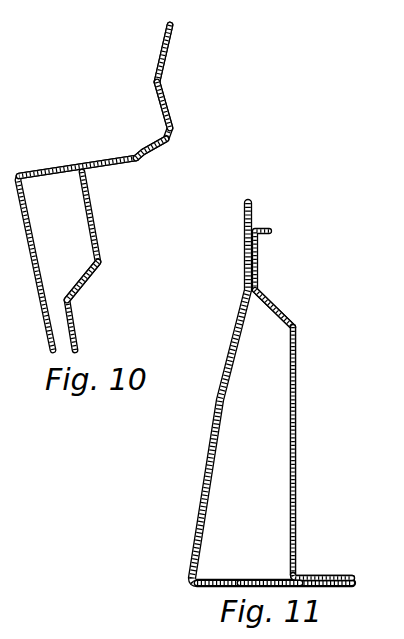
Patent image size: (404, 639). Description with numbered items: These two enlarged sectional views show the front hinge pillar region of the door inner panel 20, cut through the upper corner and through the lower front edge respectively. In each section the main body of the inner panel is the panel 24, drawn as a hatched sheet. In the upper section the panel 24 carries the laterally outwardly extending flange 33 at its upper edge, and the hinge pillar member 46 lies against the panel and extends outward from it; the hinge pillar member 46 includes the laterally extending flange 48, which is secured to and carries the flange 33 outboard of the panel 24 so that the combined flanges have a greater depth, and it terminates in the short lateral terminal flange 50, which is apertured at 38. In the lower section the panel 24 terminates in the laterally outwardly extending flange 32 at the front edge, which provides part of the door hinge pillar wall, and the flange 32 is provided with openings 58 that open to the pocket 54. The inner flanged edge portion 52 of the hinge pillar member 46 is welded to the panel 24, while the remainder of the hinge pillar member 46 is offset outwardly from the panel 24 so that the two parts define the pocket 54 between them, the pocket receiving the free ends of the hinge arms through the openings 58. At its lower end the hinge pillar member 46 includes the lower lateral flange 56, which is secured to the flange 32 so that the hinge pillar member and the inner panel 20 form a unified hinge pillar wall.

In FIG. 10, the door inner panel 20 is at (112, 187).
In FIG. 11, the door inner panel 20 is at (253, 414).
In FIG. 10, the panel 24 is at (38, 268).
In FIG. 11, the panel 24 is at (200, 497).
In FIG. 11, the flange 32 is at (200, 587).
In FIG. 10, the flange 33 is at (52, 168).
In FIG. 10, the apertures 38 is at (167, 37).
In FIG. 10, the hinge pillar member 46 is at (95, 234).
In FIG. 11, the hinge pillar member 46 is at (297, 402).
In FIG. 10, the flange 48 is at (147, 148).
In FIG. 10, the terminal flange 50 is at (175, 52).
In FIG. 11, the inner flanged edge portion 52 is at (256, 262).
In FIG. 10, the pocket 54 is at (82, 266).
In FIG. 11, the pocket 54 is at (267, 353).
In FIG. 11, the lower lateral flange 56 is at (307, 576).
In FIG. 11, the openings 58 is at (255, 580).